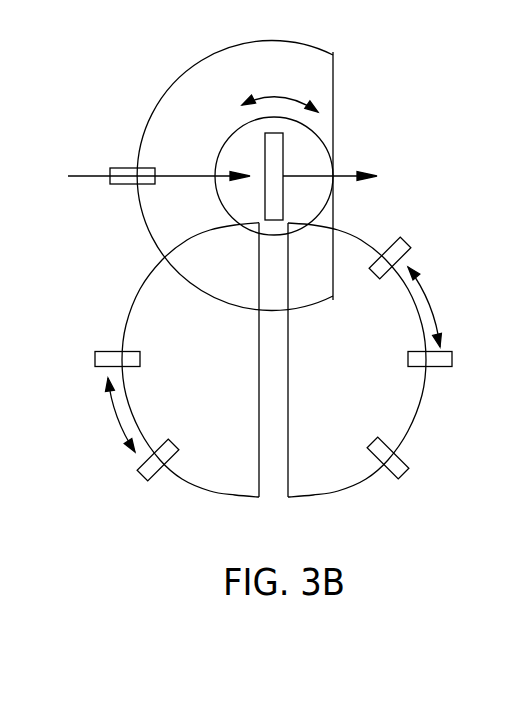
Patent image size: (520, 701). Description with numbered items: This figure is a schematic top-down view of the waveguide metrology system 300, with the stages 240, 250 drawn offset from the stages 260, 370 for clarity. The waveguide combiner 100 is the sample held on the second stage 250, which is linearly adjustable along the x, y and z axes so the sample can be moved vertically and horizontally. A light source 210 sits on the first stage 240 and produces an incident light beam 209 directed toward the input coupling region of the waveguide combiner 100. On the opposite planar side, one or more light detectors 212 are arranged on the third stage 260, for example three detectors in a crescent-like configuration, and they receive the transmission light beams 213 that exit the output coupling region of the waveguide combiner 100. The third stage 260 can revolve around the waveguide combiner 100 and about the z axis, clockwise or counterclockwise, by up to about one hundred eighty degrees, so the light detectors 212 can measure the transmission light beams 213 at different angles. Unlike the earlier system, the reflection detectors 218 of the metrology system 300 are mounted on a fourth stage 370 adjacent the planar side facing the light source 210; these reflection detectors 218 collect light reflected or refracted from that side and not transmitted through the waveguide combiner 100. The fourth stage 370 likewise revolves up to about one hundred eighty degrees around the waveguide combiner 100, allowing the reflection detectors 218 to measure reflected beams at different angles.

The metrology system 300 is at (395, 112).
The first stage 240 is at (223, 114).
The waveguide combiner 100 is at (283, 155).
The second stage 250 is at (322, 204).
The incident light beam 209 is at (188, 176).
The transmission light beams 213 is at (343, 180).
The light source 210 is at (125, 168).
The fourth stage 370 is at (227, 371).
The third stage 260 is at (365, 371).
The light detectors 212 is at (406, 246).
The reflection detectors 218 is at (105, 351).